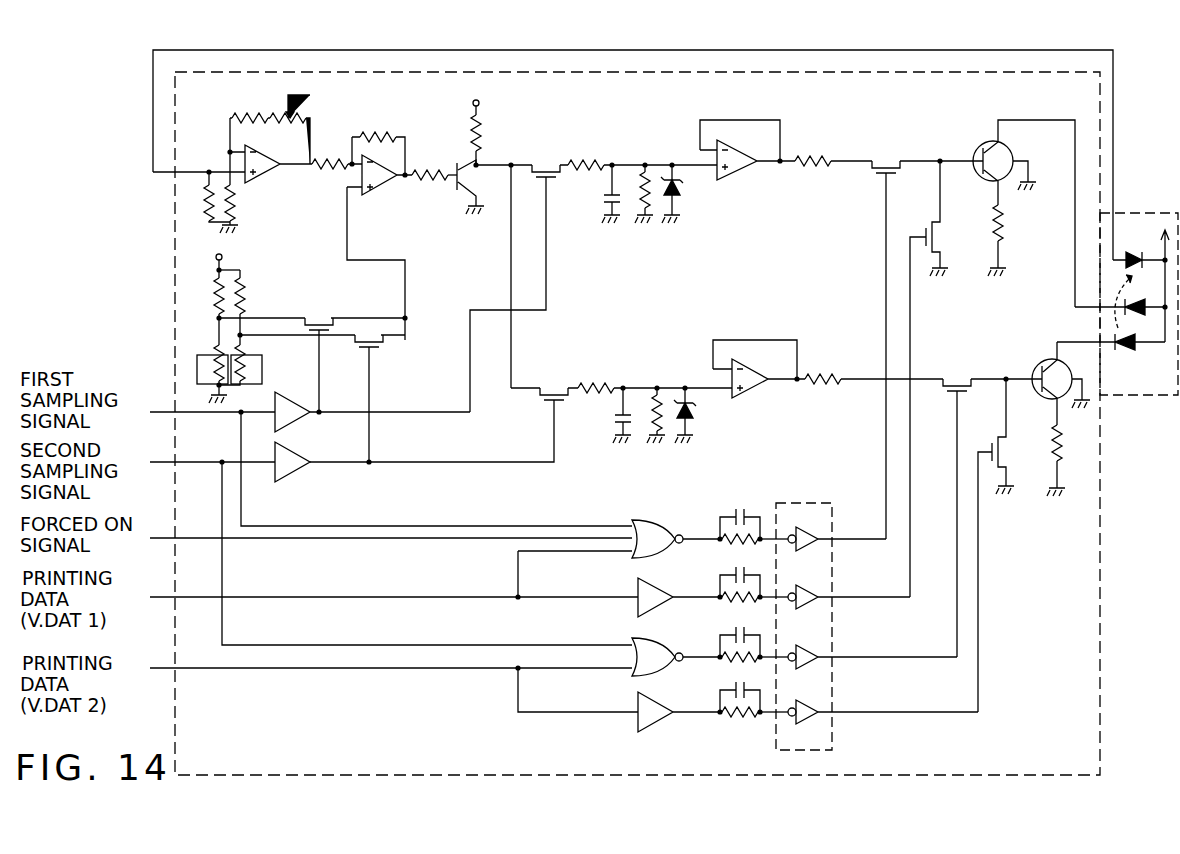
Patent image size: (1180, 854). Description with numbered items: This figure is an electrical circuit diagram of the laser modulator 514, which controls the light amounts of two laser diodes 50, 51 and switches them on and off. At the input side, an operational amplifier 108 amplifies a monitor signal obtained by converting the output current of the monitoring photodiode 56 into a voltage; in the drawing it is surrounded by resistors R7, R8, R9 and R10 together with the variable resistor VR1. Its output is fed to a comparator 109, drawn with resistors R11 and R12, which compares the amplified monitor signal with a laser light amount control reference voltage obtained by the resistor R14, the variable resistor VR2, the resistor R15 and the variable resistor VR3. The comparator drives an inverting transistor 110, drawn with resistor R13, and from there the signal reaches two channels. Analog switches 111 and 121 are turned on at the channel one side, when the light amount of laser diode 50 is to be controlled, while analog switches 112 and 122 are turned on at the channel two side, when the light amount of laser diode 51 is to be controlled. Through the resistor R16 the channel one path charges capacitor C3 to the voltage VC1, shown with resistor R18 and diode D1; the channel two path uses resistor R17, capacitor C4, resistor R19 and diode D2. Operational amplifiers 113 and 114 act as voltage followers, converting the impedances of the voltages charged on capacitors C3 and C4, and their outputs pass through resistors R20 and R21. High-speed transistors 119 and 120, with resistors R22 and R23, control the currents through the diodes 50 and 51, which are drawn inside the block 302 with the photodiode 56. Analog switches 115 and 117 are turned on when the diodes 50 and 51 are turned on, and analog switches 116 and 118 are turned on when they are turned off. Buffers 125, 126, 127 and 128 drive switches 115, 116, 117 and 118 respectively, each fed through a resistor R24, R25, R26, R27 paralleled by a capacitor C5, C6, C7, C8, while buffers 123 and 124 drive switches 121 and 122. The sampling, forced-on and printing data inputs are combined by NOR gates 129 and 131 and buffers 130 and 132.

The operational amplifier 108 is at (264, 170).
The comparator 109 is at (385, 205).
The inverting transistor 110 is at (463, 200).
The analog switch 111 is at (553, 145).
The analog switch 112 is at (554, 363).
The operational amplifier 113 is at (742, 192).
The operational amplifier 114 is at (758, 390).
The analog switch 115 is at (888, 135).
The analog switch 116 is at (922, 264).
The analog switch 117 is at (948, 361).
The analog switch 118 is at (990, 484).
The high-speed transistor 119 is at (988, 132).
The high-speed transistor 120 is at (1040, 366).
The analog switch 121 is at (321, 302).
The analog switch 122 is at (370, 304).
The buffer 123 is at (312, 425).
The buffer 124 is at (312, 475).
The buffer 125 is at (822, 532).
The buffer 126 is at (822, 590).
The buffer 127 is at (822, 650).
The buffer 128 is at (822, 707).
The NOR gate 129 is at (648, 532).
The buffer 130 is at (653, 592).
The NOR gate 131 is at (653, 652).
The buffer 132 is at (634, 704).
The light emitting unit 302 is at (1136, 213).
The laser diode 50 is at (1122, 304).
The laser diode 51 is at (1126, 351).
The monitoring photodiode 56 is at (1124, 260).
The laser modulator 514 is at (1100, 578).
The resistor R7 is at (206, 218).
The resistor R8 is at (236, 215).
The resistor R9 is at (260, 117).
The resistor R10 is at (335, 162).
The resistor R11 is at (378, 137).
The resistor R12 is at (430, 175).
The resistor R13 is at (486, 126).
The resistor R14 is at (213, 306).
The resistor R15 is at (249, 298).
The resistor R16 is at (584, 162).
The resistor R17 is at (594, 380).
The resistor R18 is at (652, 210).
The resistor R19 is at (649, 415).
The resistor R20 is at (815, 152).
The resistor R21 is at (830, 376).
The resistor R22 is at (1002, 226).
The resistor R23 is at (1064, 463).
The resistor R24 is at (742, 542).
The resistor R25 is at (742, 600).
The resistor R26 is at (726, 664).
The resistor R27 is at (726, 718).
The variable resistor VR1 is at (284, 129).
The variable resistor VR2 is at (205, 348).
The variable resistor VR3 is at (244, 346).
The capacitor C3 is at (600, 202).
The capacitor C4 is at (606, 415).
The capacitor C5 is at (752, 512).
The capacitor C6 is at (753, 574).
The capacitor C7 is at (756, 632).
The capacitor C8 is at (756, 691).
The zener diode D1 is at (688, 191).
The zener diode D2 is at (698, 405).
The voltage VC1 is at (612, 165).